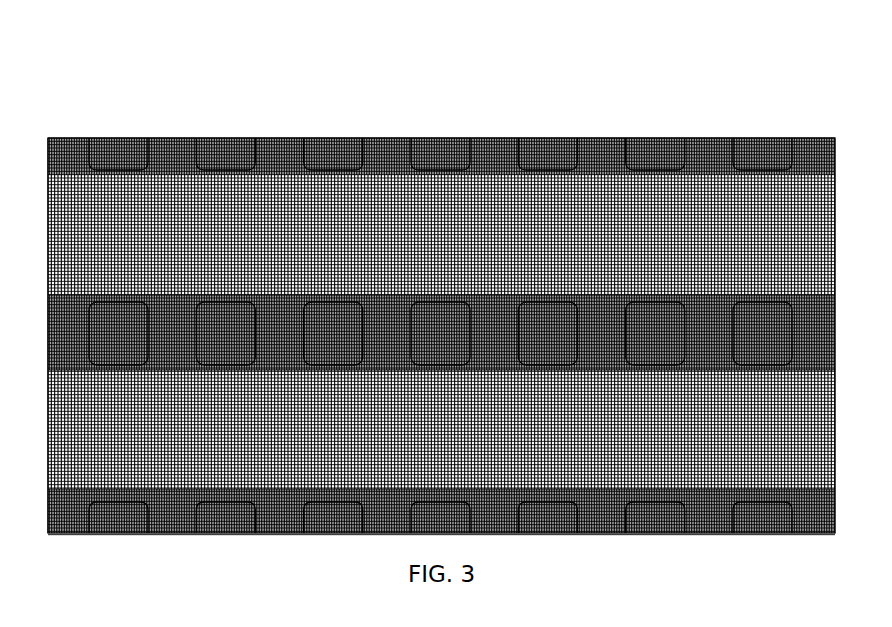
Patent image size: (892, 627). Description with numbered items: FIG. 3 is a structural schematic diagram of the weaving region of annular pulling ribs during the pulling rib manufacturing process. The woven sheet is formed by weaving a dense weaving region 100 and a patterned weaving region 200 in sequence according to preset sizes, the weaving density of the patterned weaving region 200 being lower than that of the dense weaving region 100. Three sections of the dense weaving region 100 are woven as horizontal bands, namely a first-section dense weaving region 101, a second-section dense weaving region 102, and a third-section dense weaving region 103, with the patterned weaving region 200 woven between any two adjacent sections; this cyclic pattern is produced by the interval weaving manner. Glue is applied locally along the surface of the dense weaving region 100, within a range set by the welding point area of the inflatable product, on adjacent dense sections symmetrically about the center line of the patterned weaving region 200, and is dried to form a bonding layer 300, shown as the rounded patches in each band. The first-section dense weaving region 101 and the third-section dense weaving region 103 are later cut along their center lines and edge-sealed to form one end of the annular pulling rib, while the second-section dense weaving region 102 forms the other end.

The dense weaving region 100 is at (441, 269).
The first-section dense weaving region 101 is at (384, 138).
The second-section dense weaving region 102 is at (383, 315).
The third-section dense weaving region 103 is at (287, 513).
The patterned weaving region 200 is at (528, 208).
The bonding layer 300 is at (141, 138).